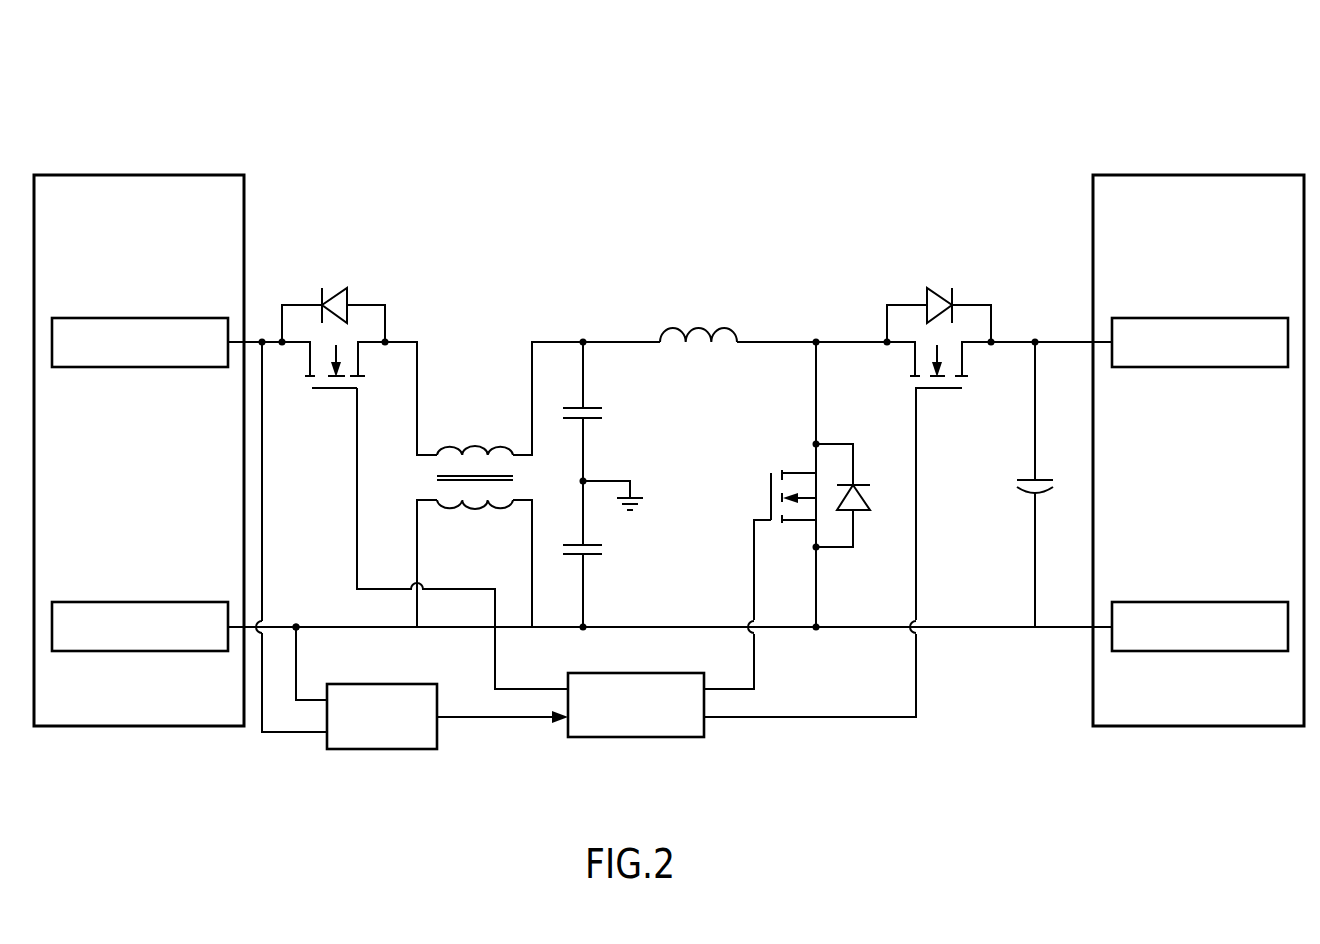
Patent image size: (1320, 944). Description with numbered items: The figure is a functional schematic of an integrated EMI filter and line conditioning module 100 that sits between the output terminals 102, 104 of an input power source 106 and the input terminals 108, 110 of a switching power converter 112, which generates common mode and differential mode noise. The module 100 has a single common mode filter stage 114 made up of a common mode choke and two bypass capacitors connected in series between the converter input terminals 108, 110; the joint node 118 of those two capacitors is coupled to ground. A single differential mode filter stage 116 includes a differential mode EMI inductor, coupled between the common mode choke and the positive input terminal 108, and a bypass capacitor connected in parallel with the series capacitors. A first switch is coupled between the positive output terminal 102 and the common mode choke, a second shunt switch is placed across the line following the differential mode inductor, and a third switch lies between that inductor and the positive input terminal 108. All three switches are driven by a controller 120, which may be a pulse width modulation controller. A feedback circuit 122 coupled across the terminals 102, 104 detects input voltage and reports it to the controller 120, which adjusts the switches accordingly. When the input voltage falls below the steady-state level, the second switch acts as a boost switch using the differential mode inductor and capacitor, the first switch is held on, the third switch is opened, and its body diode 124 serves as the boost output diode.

The integrated EMI filter and line conditioning module 100 is at (797, 76).
The positive output terminal 102 is at (120, 367).
The output terminal 104 is at (120, 651).
The input power source 106 is at (122, 175).
The positive input terminal 108 is at (1210, 367).
The input terminal 110 is at (1210, 651).
The switching power converter 112 is at (1185, 175).
The common mode filter stage 114 is at (551, 228).
The differential mode filter stage 116 is at (875, 228).
The joint node 118 is at (586, 452).
The controller 120 is at (642, 737).
The feedback circuit 122 is at (392, 749).
The body diode 124 is at (926, 303).